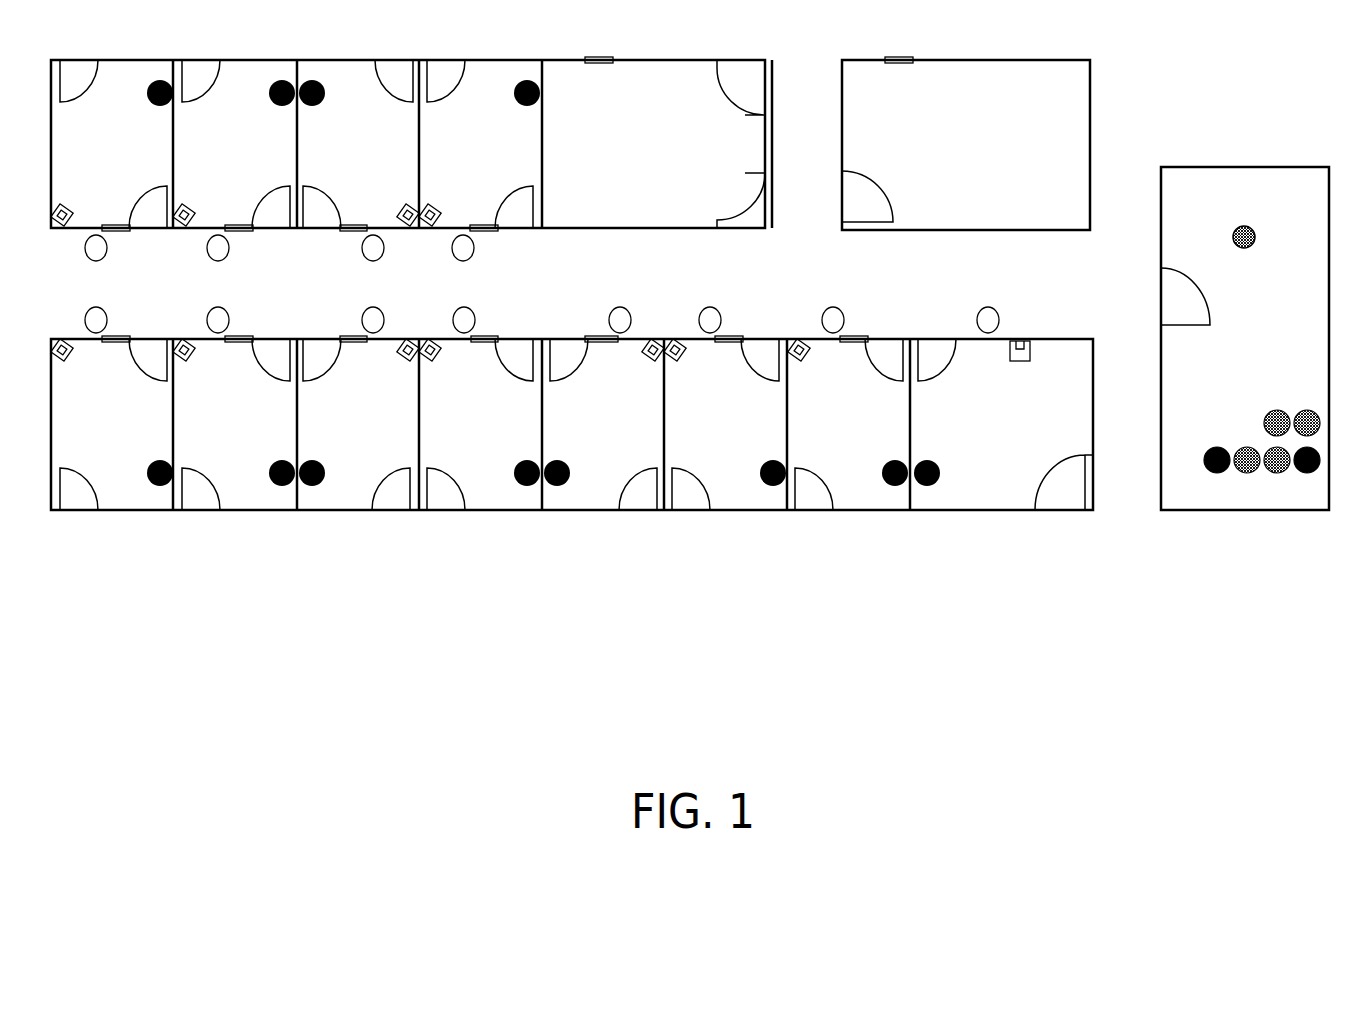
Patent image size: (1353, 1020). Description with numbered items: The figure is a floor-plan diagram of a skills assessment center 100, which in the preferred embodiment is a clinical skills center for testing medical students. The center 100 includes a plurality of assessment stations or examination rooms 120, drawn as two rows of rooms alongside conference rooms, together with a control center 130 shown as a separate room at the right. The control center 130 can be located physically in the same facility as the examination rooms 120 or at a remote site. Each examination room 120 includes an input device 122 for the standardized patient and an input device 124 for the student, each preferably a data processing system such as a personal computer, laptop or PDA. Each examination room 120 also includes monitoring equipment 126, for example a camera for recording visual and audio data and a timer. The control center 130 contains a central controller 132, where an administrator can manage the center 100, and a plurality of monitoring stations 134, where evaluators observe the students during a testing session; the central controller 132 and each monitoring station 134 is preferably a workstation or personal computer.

The skills assessment center 100 is at (663, 741).
The examination room 120 is at (862, 524).
The input device for the SP 122 is at (906, 491).
The input device for the student 124 is at (848, 310).
The monitoring equipment 126 is at (794, 330).
The control center 130 is at (1230, 375).
The central controller 132 is at (1231, 213).
The monitoring station 134 is at (1271, 486).